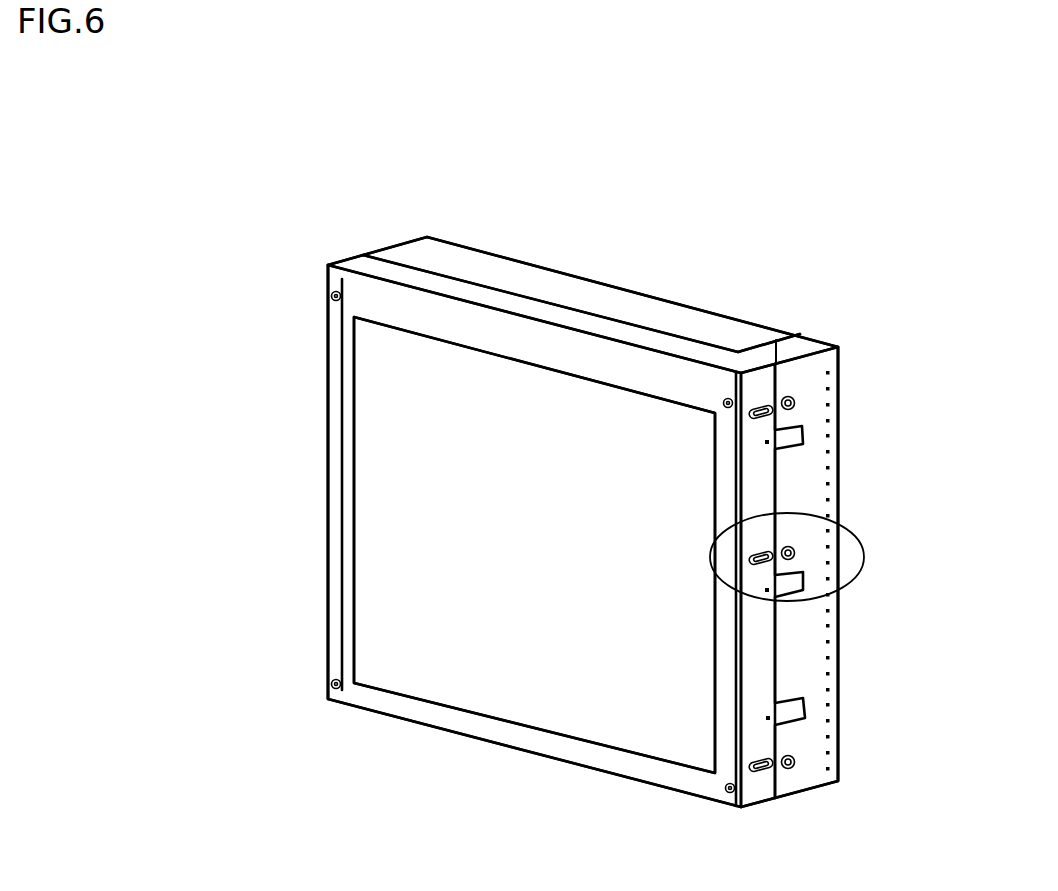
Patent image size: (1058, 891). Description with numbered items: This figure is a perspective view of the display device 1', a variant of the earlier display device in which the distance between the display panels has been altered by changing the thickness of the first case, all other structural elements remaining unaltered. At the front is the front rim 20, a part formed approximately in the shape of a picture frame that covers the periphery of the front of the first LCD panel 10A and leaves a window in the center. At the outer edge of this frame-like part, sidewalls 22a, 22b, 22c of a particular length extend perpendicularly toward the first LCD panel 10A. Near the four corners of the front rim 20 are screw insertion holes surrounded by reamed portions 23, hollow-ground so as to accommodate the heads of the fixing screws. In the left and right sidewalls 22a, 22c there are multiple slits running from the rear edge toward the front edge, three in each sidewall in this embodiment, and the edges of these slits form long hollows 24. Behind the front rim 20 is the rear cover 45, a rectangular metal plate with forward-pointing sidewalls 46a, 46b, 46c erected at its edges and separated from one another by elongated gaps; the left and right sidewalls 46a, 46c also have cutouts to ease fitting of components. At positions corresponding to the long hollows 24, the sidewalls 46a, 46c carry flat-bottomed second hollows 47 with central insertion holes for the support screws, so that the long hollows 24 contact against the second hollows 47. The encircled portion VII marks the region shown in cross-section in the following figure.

The display device 1' is at (467, 446).
The first LCD panel 10A is at (385, 533).
The front rim 20 is at (531, 741).
The sidewall 22a is at (751, 650).
The sidewall 22b is at (528, 297).
The sidewall 22c is at (348, 258).
The reamed portions 23 is at (333, 291).
The long hollows 24 is at (748, 413).
The rear cover 45 is at (818, 675).
The sidewall 46a is at (818, 482).
The sidewall 46b is at (610, 298).
The sidewall 46c is at (403, 242).
The second hollows 47 is at (796, 404).
The portion VII is at (862, 571).